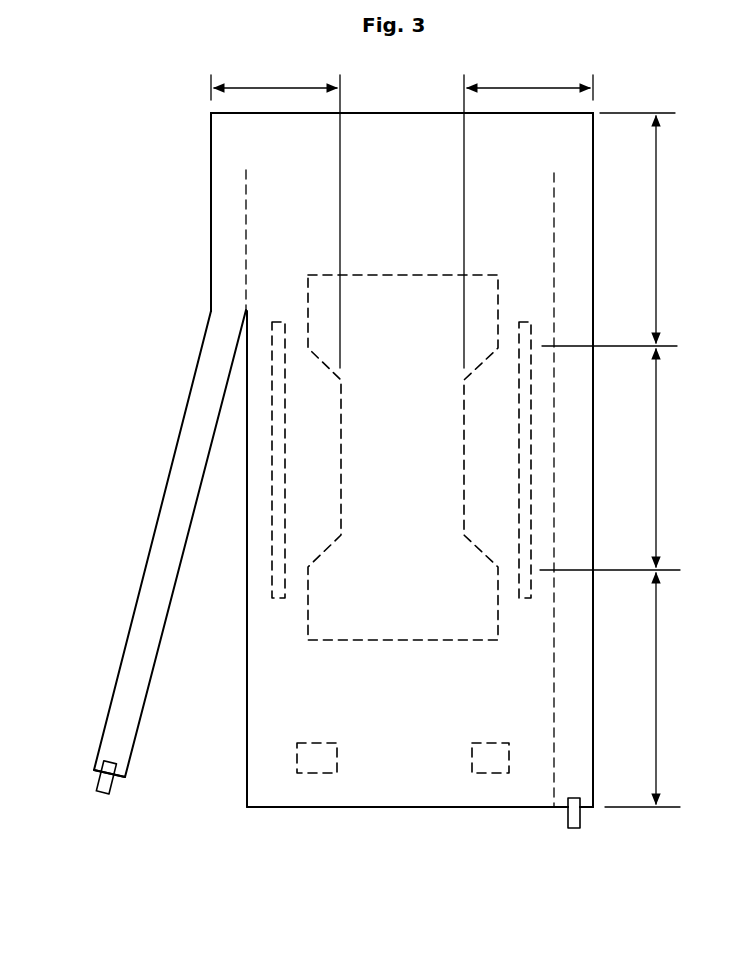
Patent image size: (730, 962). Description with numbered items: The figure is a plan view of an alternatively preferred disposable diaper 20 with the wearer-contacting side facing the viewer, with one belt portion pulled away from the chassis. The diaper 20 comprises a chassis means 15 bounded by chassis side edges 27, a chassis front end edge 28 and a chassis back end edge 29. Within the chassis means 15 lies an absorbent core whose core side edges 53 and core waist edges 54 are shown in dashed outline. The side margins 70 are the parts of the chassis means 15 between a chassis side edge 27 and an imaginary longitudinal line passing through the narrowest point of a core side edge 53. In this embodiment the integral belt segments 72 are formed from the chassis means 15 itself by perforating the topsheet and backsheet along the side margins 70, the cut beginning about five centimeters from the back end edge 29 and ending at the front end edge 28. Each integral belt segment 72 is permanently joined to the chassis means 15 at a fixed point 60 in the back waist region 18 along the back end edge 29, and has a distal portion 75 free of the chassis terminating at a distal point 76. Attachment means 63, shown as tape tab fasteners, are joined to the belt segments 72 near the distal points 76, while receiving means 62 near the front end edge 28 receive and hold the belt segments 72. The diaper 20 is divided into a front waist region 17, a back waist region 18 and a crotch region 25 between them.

The chassis means 15 is at (236, 828).
The diaper 20 is at (619, 70).
The chassis back end edge 29 is at (373, 113).
The chassis front end edge 28 is at (388, 808).
The chassis side edges 27 is at (243, 144).
The fixed point 60 is at (243, 112).
The side margin 70 is at (402, 88).
The integral belt segment 72 is at (226, 283).
The distal portion 75 is at (142, 548).
The attachment means 63 is at (114, 782).
The distal point 76 is at (98, 778).
The core waist edges 54 is at (355, 643).
The core side edges 53 is at (308, 620).
The receiving means 62 is at (318, 771).
The back waist region 18 is at (637, 228).
The crotch region 25 is at (609, 456).
The front waist region 17 is at (610, 688).